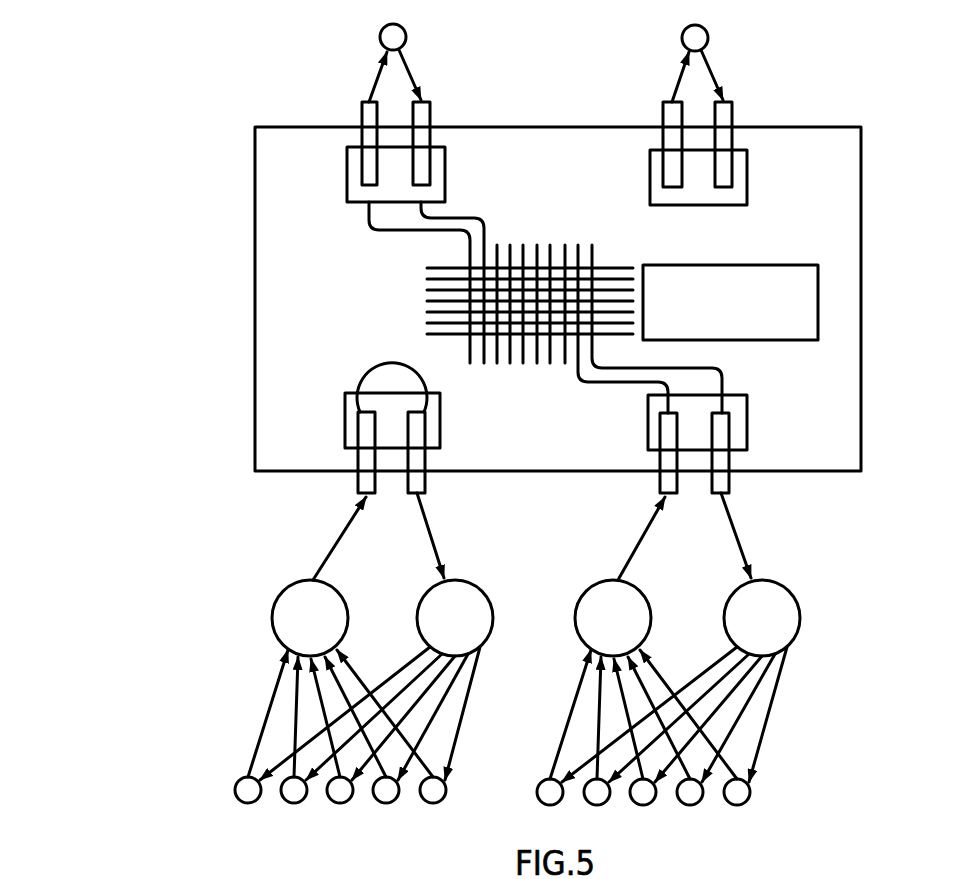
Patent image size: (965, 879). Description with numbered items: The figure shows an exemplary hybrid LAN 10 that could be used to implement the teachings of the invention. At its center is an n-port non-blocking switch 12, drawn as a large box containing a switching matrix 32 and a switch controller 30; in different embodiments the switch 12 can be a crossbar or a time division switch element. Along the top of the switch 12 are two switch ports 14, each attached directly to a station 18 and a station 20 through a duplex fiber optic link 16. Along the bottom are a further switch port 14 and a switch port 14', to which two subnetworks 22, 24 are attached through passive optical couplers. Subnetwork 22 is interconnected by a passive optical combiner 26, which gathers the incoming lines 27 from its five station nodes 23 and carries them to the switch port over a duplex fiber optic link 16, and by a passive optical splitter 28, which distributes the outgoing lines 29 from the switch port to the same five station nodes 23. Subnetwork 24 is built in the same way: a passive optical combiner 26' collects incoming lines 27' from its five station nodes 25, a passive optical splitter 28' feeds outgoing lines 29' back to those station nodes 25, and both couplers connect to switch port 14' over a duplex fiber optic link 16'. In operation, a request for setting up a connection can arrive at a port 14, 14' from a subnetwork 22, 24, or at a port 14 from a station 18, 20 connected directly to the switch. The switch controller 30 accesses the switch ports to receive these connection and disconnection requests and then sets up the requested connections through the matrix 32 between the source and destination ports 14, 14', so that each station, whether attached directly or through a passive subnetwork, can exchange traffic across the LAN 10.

The hybrid LAN 10 is at (192, 81).
The n-port non-blocking switch 12 is at (255, 313).
The switch port 14 is at (546, 297).
The switch port 14' is at (733, 444).
The duplex fiber optic link 16 is at (555, 308).
The duplex fiber optic link 16' is at (732, 536).
The station 18 is at (380, 33).
The station 20 is at (683, 33).
The subnetwork 22 is at (255, 698).
The subnetwork 24 is at (783, 701).
The passive optical combiner 26 is at (252, 618).
The passive optical combiner 26' is at (602, 582).
The passive optical splitter 28 is at (469, 587).
The passive optical splitter 28' is at (819, 612).
The input lines 27 is at (313, 713).
The input lines 27' is at (621, 714).
The output lines 29 is at (394, 713).
The output lines 29' is at (709, 714).
The switch controller 30 is at (818, 292).
The matrix 32 is at (415, 297).
The station nodes 23 is at (340, 808).
The station nodes 25 is at (641, 809).